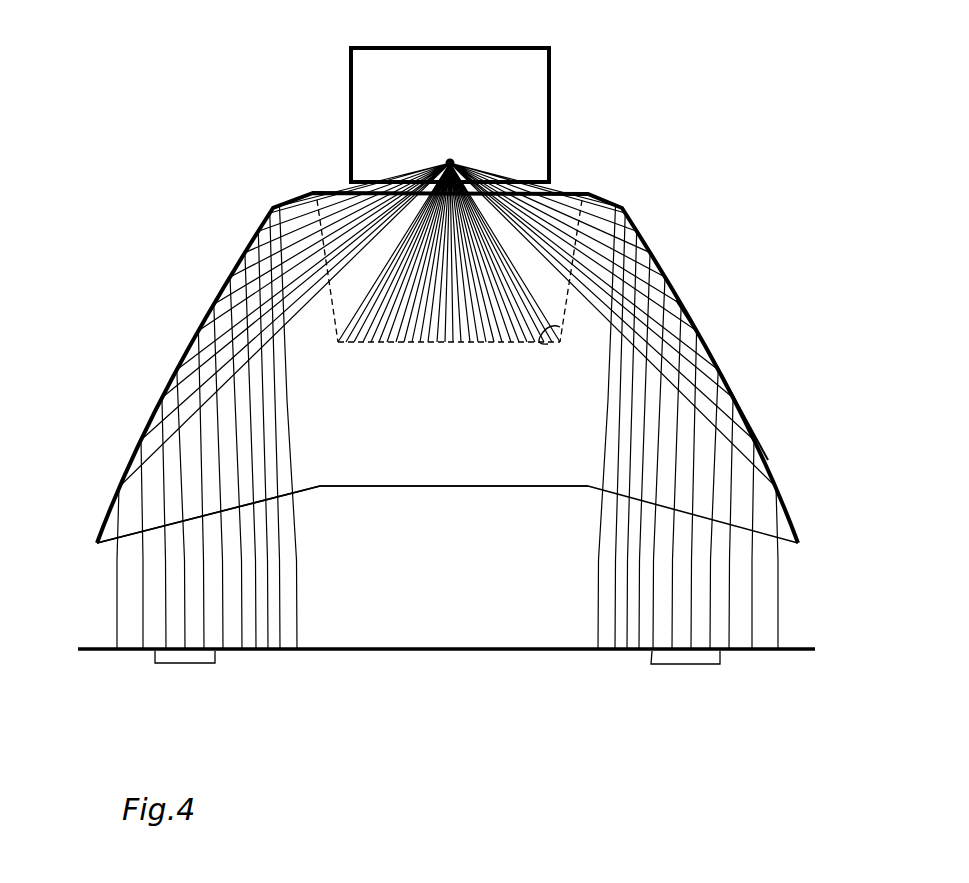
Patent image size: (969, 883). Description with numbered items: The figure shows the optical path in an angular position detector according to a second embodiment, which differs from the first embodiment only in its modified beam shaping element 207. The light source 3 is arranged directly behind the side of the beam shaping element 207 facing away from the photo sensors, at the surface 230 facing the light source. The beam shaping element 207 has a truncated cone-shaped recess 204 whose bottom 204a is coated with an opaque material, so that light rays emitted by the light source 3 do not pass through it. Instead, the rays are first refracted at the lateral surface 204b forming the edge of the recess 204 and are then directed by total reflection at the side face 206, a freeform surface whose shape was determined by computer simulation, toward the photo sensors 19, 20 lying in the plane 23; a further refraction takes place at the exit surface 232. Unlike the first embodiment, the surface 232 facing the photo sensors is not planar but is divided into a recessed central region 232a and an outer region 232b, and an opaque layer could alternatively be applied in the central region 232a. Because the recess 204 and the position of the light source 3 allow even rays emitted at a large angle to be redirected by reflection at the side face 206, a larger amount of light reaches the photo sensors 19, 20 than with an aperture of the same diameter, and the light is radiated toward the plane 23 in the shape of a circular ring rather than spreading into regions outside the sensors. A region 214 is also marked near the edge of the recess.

The light source 3 is at (548, 110).
The photo sensor 19 is at (192, 658).
The photo sensor 20 is at (685, 665).
The plane 23 is at (792, 655).
The recess 204 is at (580, 232).
The bottom of recess 204a is at (428, 340).
The lateral surface of recess 204b is at (643, 233).
The side face 206 is at (743, 415).
The beam shaping element 207 is at (700, 336).
The edge region 214 is at (548, 344).
The surface facing the light source 230 is at (563, 193).
The exit surface 232 is at (100, 540).
The recessed central region 232a is at (430, 490).
The outer region 232b is at (137, 533).